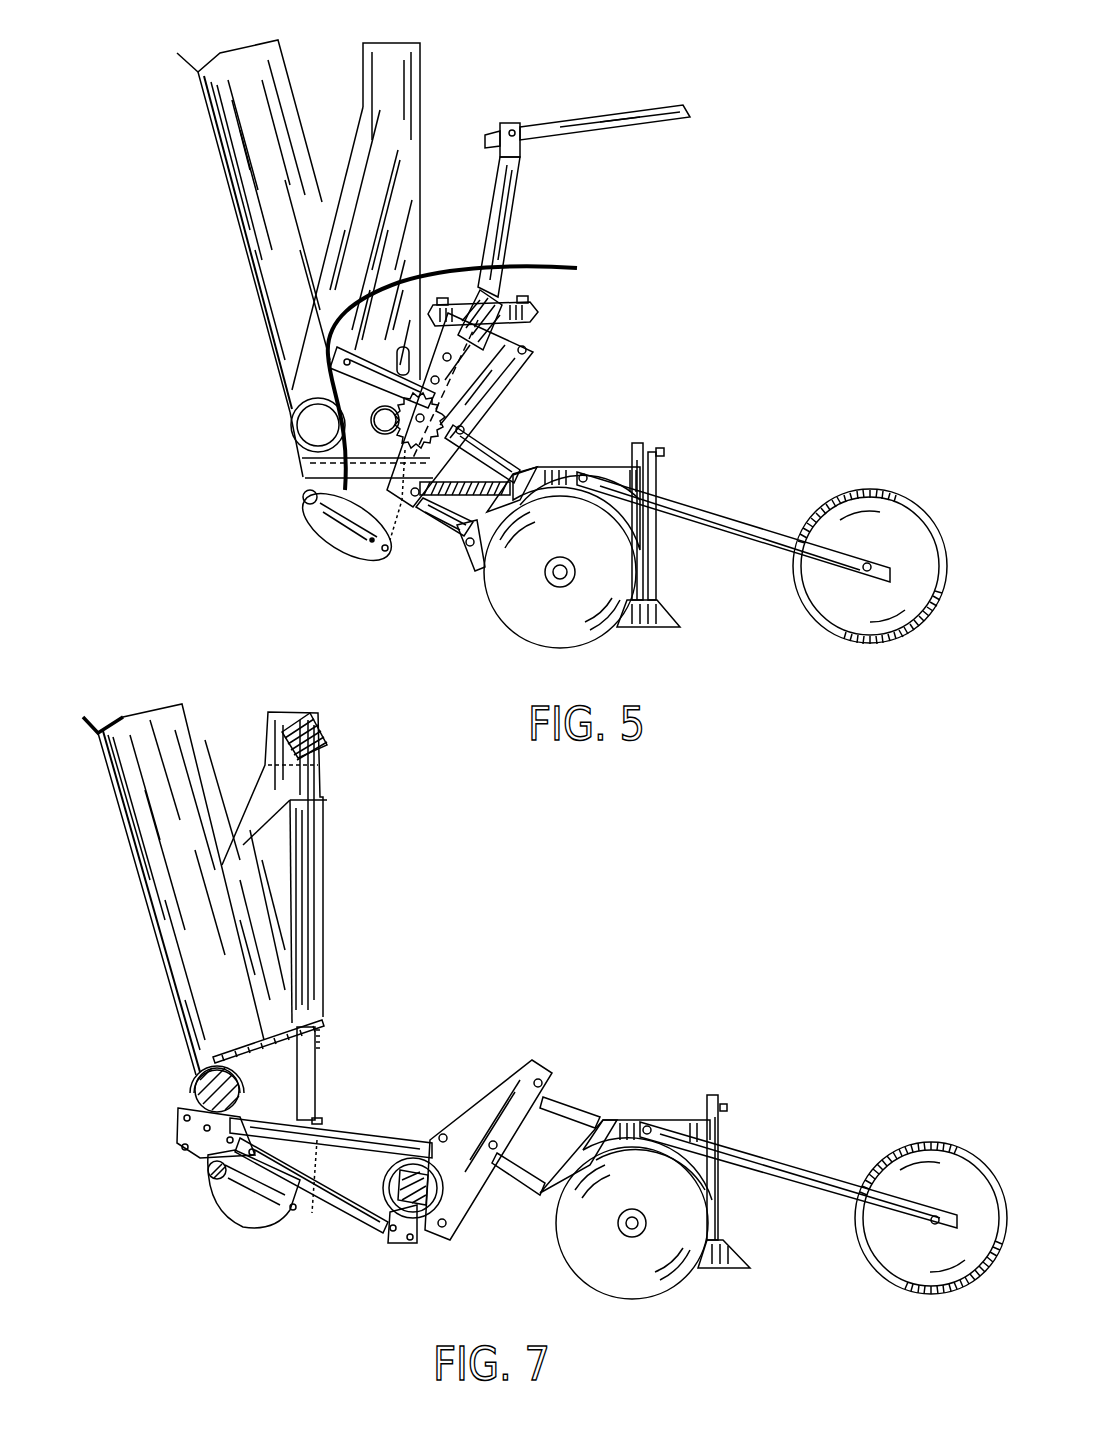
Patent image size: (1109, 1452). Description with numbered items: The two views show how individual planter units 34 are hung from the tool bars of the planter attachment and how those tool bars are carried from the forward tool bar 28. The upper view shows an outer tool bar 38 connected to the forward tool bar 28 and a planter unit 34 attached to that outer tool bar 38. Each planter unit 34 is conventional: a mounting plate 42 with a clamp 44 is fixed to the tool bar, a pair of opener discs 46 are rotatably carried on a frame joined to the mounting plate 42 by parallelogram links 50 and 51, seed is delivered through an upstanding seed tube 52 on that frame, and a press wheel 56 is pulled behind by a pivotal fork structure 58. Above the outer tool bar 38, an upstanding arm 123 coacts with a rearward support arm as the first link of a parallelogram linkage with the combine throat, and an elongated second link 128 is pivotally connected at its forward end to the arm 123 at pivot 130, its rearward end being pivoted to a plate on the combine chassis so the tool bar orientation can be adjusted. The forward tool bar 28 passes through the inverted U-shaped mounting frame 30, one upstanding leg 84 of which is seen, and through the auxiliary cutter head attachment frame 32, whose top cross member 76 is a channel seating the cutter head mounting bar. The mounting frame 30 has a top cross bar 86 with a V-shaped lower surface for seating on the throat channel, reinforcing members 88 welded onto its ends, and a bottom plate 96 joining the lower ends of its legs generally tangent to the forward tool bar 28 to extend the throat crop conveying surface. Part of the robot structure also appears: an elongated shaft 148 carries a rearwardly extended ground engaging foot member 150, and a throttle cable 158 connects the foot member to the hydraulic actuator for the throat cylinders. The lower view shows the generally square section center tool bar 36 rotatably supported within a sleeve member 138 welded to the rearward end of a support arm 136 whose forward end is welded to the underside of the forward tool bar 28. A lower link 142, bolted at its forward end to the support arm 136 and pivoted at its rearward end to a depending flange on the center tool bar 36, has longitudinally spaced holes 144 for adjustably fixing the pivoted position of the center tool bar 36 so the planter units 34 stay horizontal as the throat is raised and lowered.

In FIG. 5, the forward tool bar 28 is at (292, 432).
In FIG. 7, the forward tool bar 28 is at (214, 1085).
In FIG. 5, the mounting frame 30 is at (422, 70).
In FIG. 7, the mounting frame 30 is at (330, 781).
In FIG. 5, the auxiliary cutter head attachment frame 32 is at (218, 186).
In FIG. 7, the auxiliary cutter head attachment frame 32 is at (120, 840).
In FIG. 5, the planter unit 34 is at (604, 455).
In FIG. 7, the planter unit 34 is at (676, 1092).
In FIG. 7, the center tool bar 36 is at (425, 1226).
In FIG. 5, the outer tool bar 38 is at (520, 313).
In FIG. 5, the mounting plate 42 is at (512, 375).
In FIG. 5, the clamp 44 is at (530, 320).
In FIG. 5, the opener discs 46 is at (547, 625).
In FIG. 7, the opener discs 46 is at (632, 1223).
In FIG. 5, the parallelogram link 50 is at (462, 522).
In FIG. 5, the parallelogram link 51 is at (508, 458).
In FIG. 5, the seed tube 52 is at (655, 567).
In FIG. 5, the press wheel 56 is at (838, 617).
In FIG. 7, the press wheel 56 is at (918, 1275).
In FIG. 5, the pivotal fork structure 58 is at (732, 522).
In FIG. 7, the pivotal fork structure 58 is at (795, 1178).
In FIG. 7, the top cross member 76 is at (92, 722).
In FIG. 5, the upstanding leg 84 is at (390, 128).
In FIG. 7, the top cross bar 86 is at (327, 746).
In FIG. 7, the reinforcing members 88 is at (322, 722).
In FIG. 7, the bottom plate 96 is at (285, 1040).
In FIG. 5, the upstanding arm 123 is at (497, 218).
In FIG. 5, the second link 128 is at (595, 122).
In FIG. 5, the pivotal connection 130 is at (511, 128).
In FIG. 7, the support arm 136 is at (365, 1140).
In FIG. 7, the sleeve member 138 is at (452, 1196).
In FIG. 7, the lower link 142 is at (340, 1205).
In FIG. 7, the holes 144 is at (248, 1152).
In FIG. 7, the shaft 148 is at (207, 1178).
In FIG. 5, the foot member 150 is at (345, 540).
In FIG. 7, the foot member 150 is at (243, 1205).
In FIG. 5, the throttle cable 158 is at (552, 270).